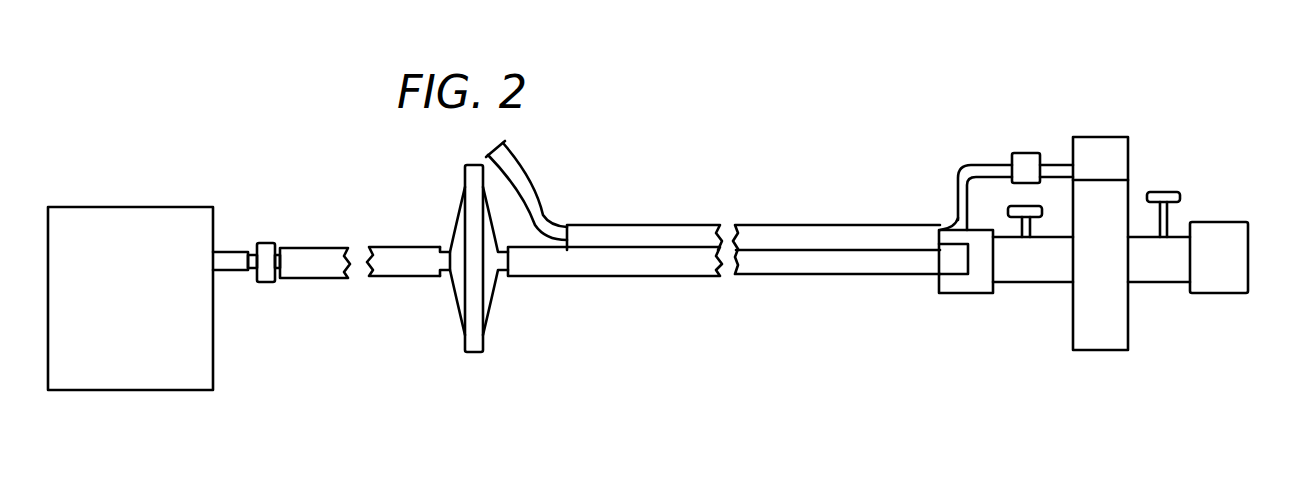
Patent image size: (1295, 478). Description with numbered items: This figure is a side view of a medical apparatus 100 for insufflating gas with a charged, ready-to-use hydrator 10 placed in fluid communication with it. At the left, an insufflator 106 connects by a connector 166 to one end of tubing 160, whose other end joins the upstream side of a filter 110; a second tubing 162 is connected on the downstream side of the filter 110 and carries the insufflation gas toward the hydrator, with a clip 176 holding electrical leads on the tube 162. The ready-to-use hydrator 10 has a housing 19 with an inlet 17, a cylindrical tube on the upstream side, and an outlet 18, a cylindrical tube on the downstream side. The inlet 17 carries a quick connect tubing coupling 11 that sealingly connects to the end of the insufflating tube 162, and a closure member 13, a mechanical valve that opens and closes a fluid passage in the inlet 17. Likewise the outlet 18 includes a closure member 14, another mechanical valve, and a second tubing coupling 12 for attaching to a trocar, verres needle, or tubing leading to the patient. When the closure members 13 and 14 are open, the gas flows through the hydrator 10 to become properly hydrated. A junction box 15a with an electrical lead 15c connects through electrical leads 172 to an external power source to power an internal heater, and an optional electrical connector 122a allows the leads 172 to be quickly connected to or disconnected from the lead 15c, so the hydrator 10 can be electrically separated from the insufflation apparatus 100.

The ready-to-use hydrator 10 is at (1147, 92).
The quick connect tubing coupling 11 is at (968, 293).
The second tubing coupling 12 is at (1228, 295).
The closure member 13 is at (1010, 207).
The closure member 14 is at (1170, 190).
The junction box 15a is at (1120, 137).
The electrical lead 15c is at (1053, 158).
The inlet 17 is at (1032, 282).
The outlet 18 is at (1160, 282).
The housing 19 is at (1102, 352).
The medical apparatus 100 is at (647, 173).
The insufflator 106 is at (100, 390).
The filter 110 is at (470, 352).
The electrical connector 122a is at (1025, 153).
The tubing 160 is at (397, 278).
The second tubing 162 is at (603, 278).
The connector 166 is at (268, 282).
The electrical leads 172 is at (983, 165).
The clip 176 is at (768, 225).